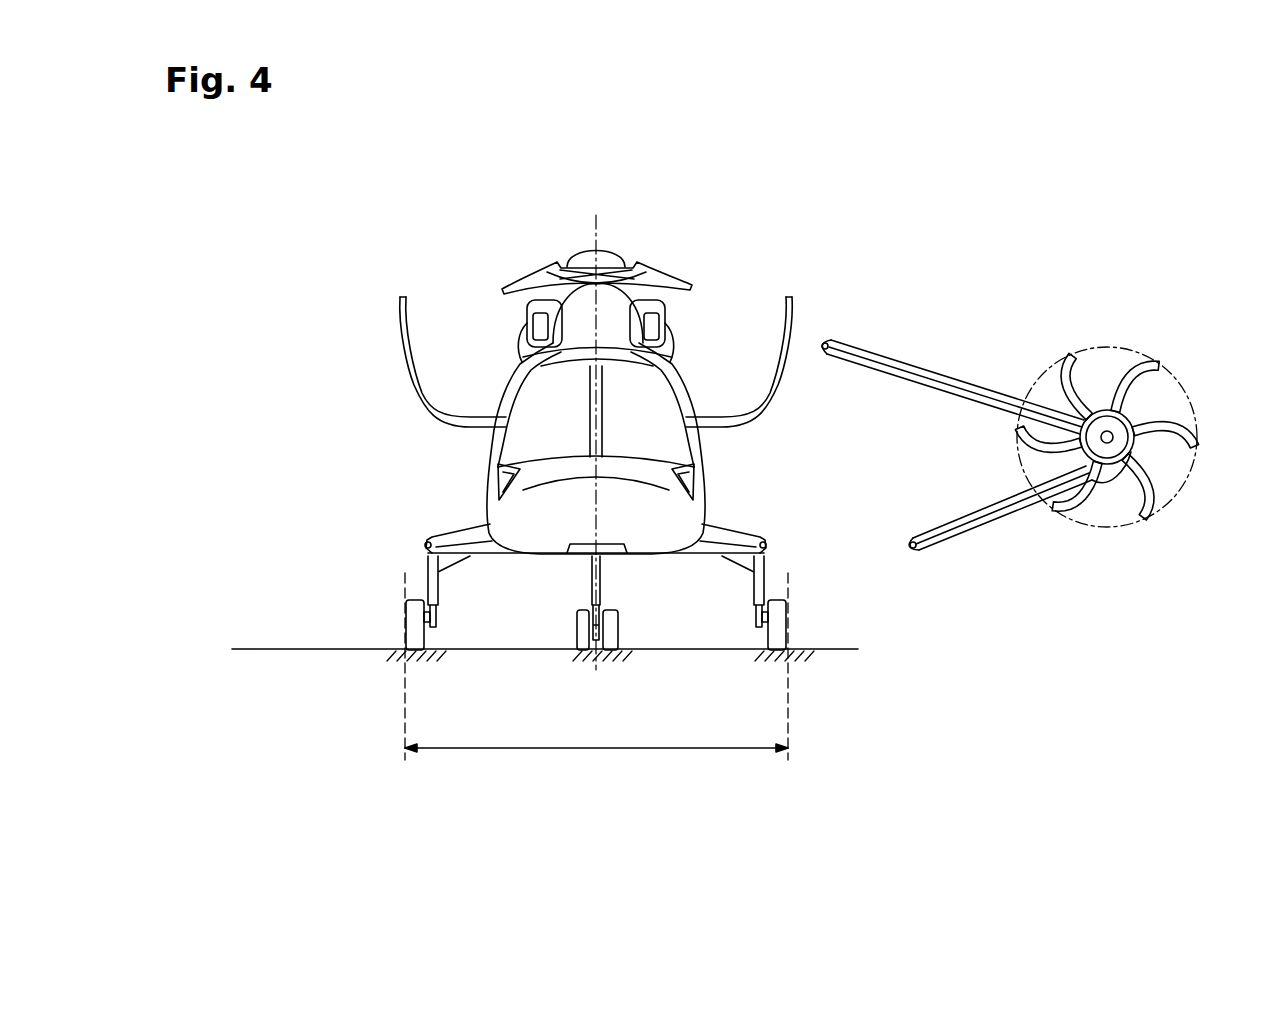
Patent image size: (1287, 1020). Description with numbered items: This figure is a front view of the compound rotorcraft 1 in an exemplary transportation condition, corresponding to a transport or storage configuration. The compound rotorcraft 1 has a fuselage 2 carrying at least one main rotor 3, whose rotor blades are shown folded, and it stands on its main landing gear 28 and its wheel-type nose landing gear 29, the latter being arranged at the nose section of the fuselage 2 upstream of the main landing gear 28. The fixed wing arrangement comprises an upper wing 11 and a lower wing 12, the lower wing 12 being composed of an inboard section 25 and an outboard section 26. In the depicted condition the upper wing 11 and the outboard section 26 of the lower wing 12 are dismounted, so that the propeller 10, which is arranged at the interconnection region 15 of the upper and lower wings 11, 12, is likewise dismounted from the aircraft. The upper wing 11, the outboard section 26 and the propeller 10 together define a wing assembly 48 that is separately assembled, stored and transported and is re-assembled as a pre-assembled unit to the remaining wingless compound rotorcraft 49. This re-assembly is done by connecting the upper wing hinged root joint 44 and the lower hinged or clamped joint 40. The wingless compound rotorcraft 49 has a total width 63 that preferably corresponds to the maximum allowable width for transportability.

The compound rotorcraft 1 is at (423, 221).
The fuselage 2 is at (473, 472).
The main rotor 3 is at (520, 273).
The propeller 10 is at (1140, 352).
The upper wing 11 is at (958, 378).
The lower wing 12 is at (1017, 517).
The interconnection region 15 is at (1132, 412).
The inboard section 25 is at (741, 527).
The outboard section 26 is at (978, 533).
The main landing gear 28 is at (750, 598).
The wheel-type nose landing gear 29 is at (589, 580).
The lower hinged or clamped joint 40 is at (778, 548).
The upper wing hinged root joint 44 is at (668, 330).
The wing assembly 48 is at (1032, 252).
The wingless compound rotorcraft 49 is at (689, 253).
The total width 63 is at (597, 750).